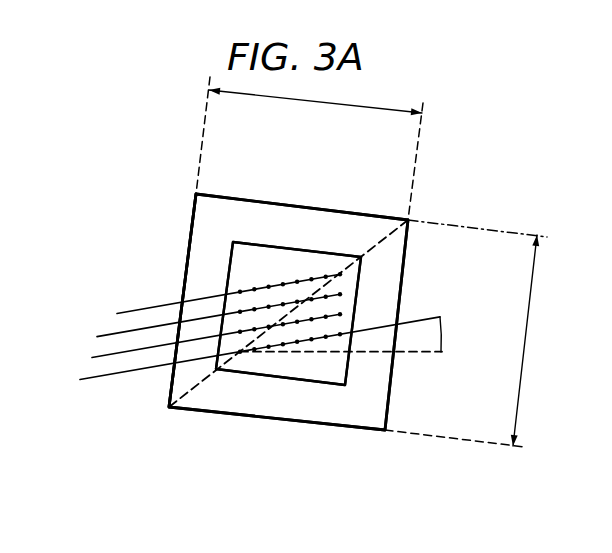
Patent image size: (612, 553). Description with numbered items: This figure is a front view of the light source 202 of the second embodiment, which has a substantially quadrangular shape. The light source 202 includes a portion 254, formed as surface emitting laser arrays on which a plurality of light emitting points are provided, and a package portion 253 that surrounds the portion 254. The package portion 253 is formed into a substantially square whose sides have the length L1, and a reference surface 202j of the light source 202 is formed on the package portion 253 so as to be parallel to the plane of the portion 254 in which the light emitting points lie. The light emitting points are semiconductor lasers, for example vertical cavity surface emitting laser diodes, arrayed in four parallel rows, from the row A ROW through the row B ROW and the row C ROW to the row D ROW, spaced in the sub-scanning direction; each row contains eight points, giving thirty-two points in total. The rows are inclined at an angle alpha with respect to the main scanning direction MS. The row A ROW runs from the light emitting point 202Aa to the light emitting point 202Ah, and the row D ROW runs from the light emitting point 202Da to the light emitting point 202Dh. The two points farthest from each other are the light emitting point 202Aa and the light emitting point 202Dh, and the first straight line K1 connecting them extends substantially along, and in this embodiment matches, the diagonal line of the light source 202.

The light source 202 is at (414, 270).
The reference surface 202j is at (199, 270).
The package portion 253 is at (392, 297).
The portion (surface emitting laser arrays) 254 is at (282, 365).
The light emitting point 202Da is at (240, 290).
The light emitting point 202Dh is at (340, 274).
The light emitting point 202Aa is at (238, 356).
The light emitting point 202Ah is at (338, 337).
The first straight line (array line) K1 is at (185, 408).
The main scanning direction MS is at (420, 353).
The side length L1 is at (371, 262).
The row A A ROW is at (97, 377).
The row B B ROW is at (100, 356).
The row C C ROW is at (112, 334).
The row D D ROW is at (128, 313).